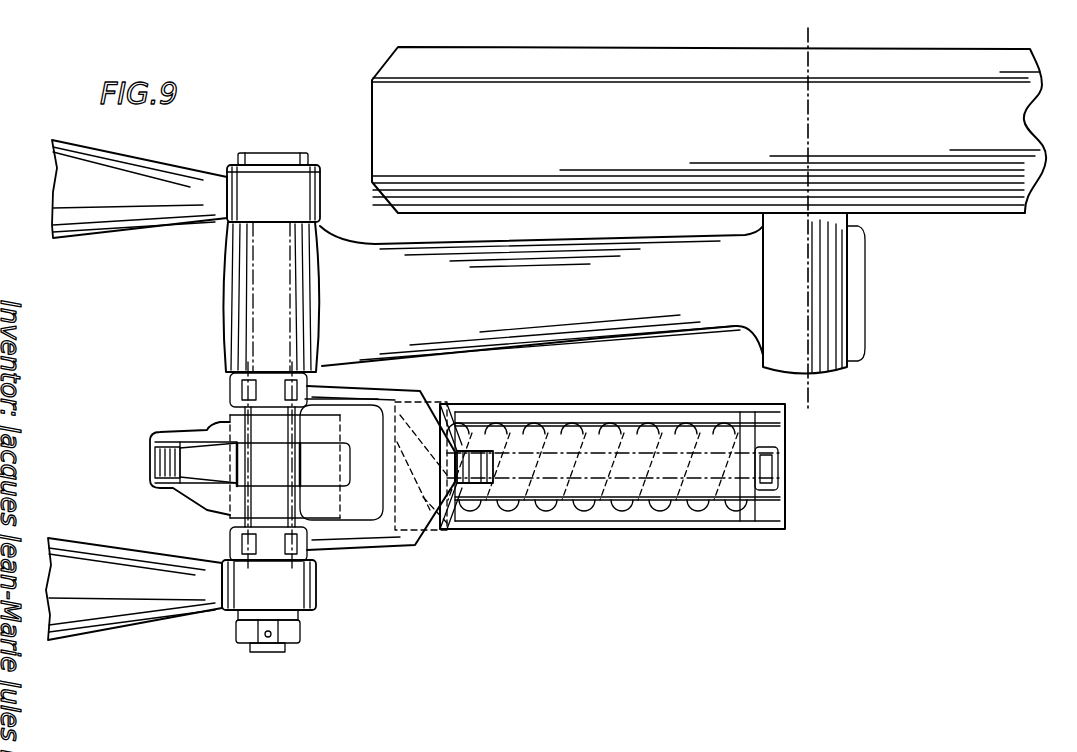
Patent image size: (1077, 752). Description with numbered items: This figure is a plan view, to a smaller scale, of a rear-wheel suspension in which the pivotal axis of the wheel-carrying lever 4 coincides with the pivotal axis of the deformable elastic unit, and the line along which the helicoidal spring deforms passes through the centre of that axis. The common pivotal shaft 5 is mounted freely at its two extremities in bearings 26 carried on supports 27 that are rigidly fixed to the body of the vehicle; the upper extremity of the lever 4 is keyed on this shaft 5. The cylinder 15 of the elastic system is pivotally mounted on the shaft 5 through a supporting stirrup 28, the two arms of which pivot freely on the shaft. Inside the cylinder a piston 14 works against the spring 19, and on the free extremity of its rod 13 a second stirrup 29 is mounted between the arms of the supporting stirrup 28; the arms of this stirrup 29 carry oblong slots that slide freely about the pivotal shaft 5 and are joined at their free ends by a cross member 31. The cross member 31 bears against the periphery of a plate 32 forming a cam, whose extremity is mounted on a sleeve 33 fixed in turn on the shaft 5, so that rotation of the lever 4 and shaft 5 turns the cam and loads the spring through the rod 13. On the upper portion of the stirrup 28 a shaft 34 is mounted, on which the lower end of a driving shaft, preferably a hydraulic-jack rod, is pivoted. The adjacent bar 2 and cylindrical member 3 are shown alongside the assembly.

The bar 2 is at (750, 56).
The cylindrical sleeve 3 is at (832, 318).
The wheel-carrying lever 4 is at (598, 330).
The pivotal shaft 5 is at (250, 303).
The rod 13 is at (598, 508).
The piston 14 is at (782, 504).
The cylinder 15 is at (786, 426).
The spring 19 is at (678, 518).
The bearings 26 is at (248, 182).
The supports 27 is at (133, 172).
The supporting stirrup 28 is at (355, 543).
The second stirrup 29 is at (335, 425).
The cross member 31 is at (162, 464).
The plate forming a cam 32 is at (195, 465).
The sleeve 33 is at (300, 470).
The shaft 34 is at (472, 460).